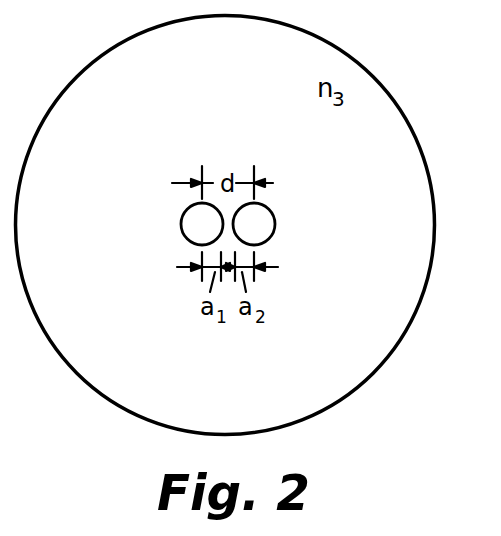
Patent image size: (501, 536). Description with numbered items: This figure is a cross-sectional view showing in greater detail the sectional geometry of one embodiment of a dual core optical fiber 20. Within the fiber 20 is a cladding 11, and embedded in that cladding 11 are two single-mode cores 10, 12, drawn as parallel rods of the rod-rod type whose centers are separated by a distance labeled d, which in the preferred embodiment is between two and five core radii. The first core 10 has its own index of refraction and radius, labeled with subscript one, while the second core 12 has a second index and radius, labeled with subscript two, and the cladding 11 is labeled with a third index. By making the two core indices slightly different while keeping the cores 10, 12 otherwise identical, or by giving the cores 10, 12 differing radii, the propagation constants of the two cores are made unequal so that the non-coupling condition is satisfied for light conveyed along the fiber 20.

The dual core optical fiber 20 is at (344, 52).
The cladding 11 is at (247, 126).
The first core 10 is at (183, 215).
The second core 12 is at (273, 215).